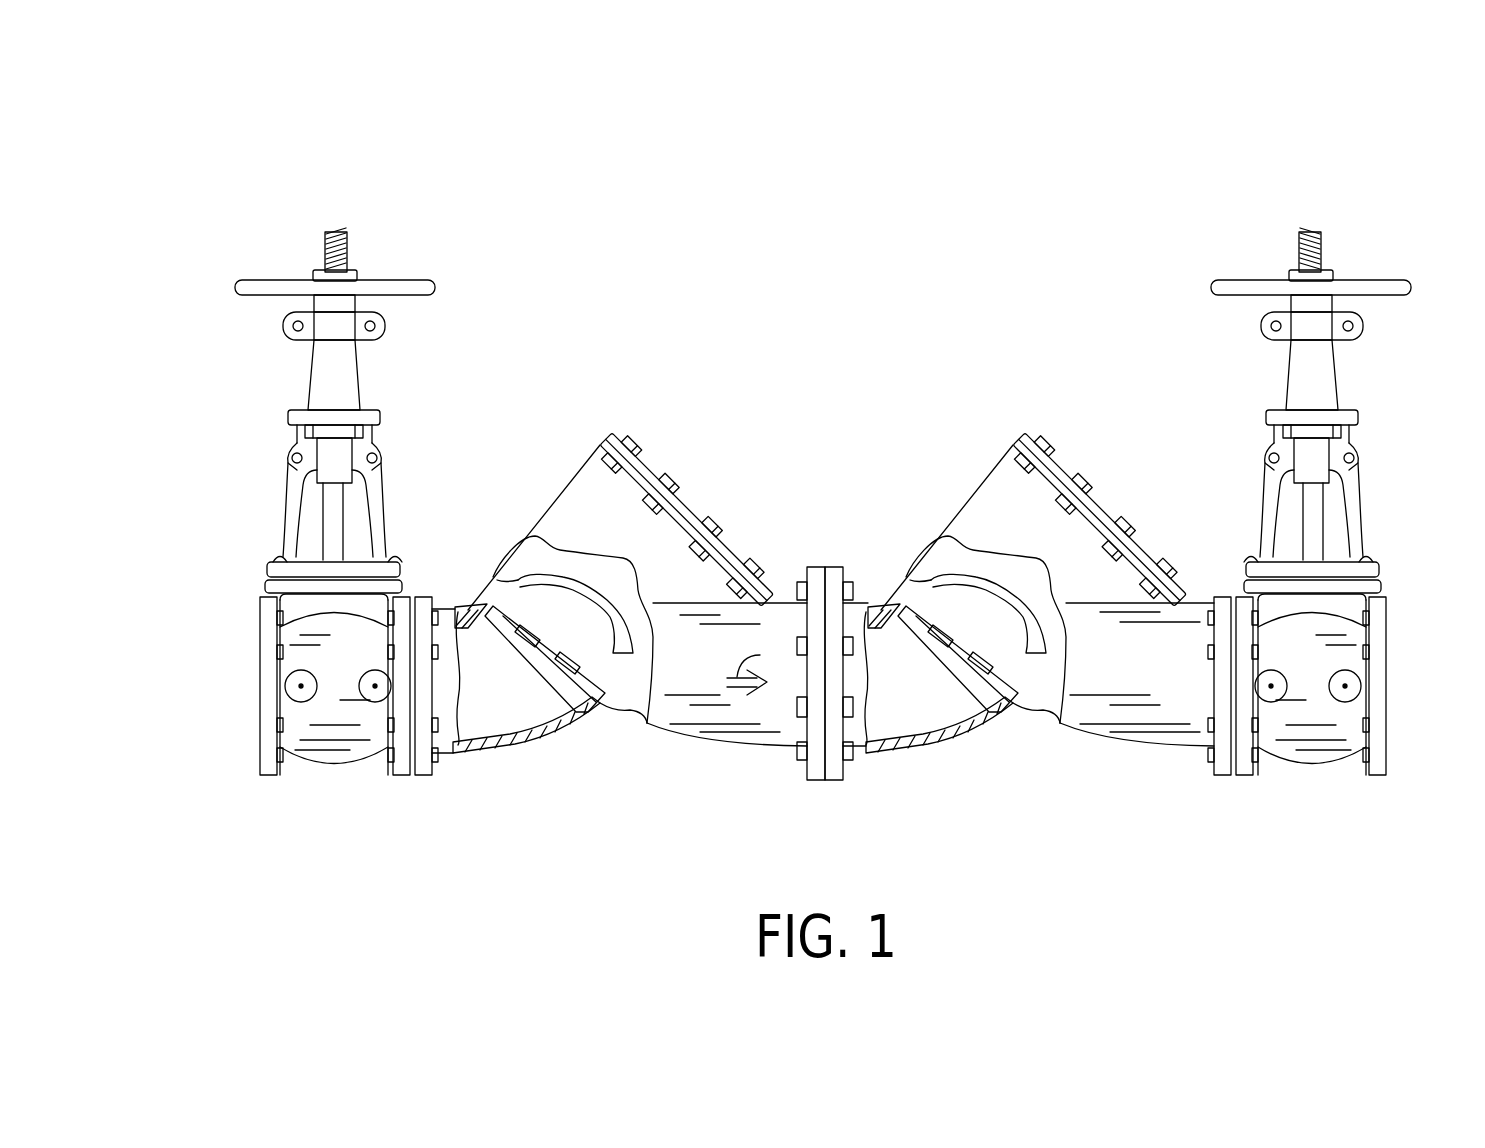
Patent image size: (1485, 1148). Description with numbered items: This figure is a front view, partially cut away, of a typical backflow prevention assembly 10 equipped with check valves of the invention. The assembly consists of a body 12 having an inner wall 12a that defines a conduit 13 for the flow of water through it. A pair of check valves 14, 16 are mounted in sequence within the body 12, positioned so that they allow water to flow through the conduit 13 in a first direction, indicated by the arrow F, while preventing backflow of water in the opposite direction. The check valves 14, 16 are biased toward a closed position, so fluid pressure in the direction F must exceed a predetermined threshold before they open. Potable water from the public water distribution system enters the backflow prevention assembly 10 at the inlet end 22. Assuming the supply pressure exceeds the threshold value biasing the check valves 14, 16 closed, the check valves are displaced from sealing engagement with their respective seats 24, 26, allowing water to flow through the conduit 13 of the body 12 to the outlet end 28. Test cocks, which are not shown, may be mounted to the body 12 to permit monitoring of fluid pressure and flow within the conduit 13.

The backflow prevention assembly 10 is at (316, 140).
The body 12 is at (741, 745).
The inner wall 12a is at (508, 743).
The conduit 13 is at (511, 702).
The check valve 14 is at (495, 553).
The check valve 16 is at (910, 548).
The inlet end 22 is at (258, 684).
The seat 24 is at (573, 712).
The seat 26 is at (983, 717).
The outlet end 28 is at (1390, 674).